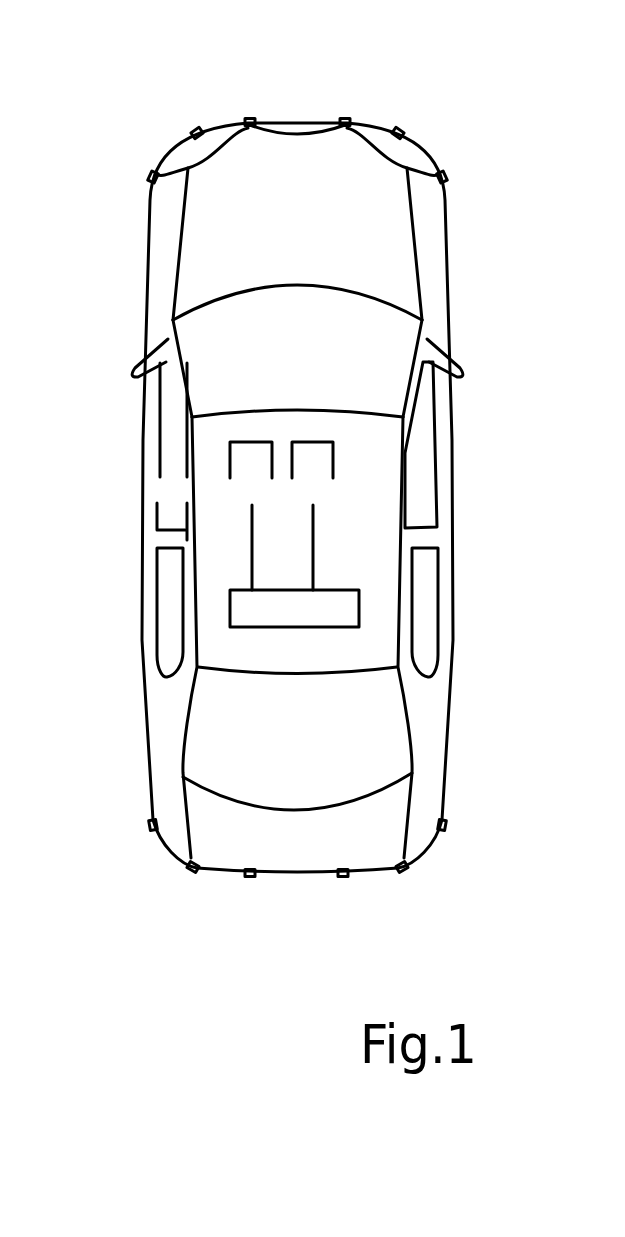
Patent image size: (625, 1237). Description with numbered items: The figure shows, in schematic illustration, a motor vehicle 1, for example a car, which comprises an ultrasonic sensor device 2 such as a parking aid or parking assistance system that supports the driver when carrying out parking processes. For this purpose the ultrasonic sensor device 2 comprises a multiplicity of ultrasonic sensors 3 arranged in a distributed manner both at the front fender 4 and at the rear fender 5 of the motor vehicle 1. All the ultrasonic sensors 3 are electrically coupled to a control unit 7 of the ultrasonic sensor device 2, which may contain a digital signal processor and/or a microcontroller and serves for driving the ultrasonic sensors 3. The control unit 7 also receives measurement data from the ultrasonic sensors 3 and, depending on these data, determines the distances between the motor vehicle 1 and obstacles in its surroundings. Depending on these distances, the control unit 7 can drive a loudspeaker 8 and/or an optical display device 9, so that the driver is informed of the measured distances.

The motor vehicle 1 is at (453, 462).
The ultrasonic sensor device 2 is at (128, 126).
The ultrasonic sensors 3 is at (196, 130).
The front fender 4 is at (298, 123).
The rear fender 5 is at (297, 871).
The control unit 7 is at (360, 608).
The loudspeaker 8 is at (228, 463).
The optical display device 9 is at (335, 460).